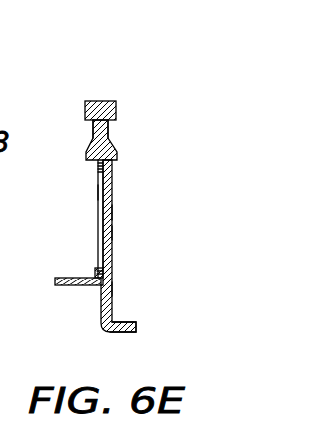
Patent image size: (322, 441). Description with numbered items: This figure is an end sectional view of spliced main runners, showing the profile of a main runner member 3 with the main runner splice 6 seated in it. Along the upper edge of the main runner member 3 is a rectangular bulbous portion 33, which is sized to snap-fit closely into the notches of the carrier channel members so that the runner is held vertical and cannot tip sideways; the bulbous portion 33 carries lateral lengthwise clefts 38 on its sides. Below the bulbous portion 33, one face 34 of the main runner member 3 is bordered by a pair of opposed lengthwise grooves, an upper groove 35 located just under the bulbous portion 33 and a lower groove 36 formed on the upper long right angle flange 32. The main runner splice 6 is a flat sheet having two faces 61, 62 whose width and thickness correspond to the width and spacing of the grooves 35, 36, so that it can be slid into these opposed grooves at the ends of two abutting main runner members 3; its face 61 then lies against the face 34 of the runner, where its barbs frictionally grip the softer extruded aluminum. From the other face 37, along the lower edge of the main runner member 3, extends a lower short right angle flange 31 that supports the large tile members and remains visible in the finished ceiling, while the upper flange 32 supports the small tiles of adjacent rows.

The main runner member 3 is at (116, 182).
The main runner splice 6 is at (97, 193).
The lower short right angle flange 31 is at (130, 327).
The upper long right angle flange 32 is at (62, 286).
The rectangular bulbous portion 33 is at (85, 110).
The face 34 is at (113, 253).
The upper groove 35 is at (110, 150).
The lower groove 36 is at (113, 289).
The other face 37 is at (113, 233).
The lateral lengthwise clefts 38 is at (109, 128).
The face 61 is at (113, 213).
The face 62 is at (98, 231).